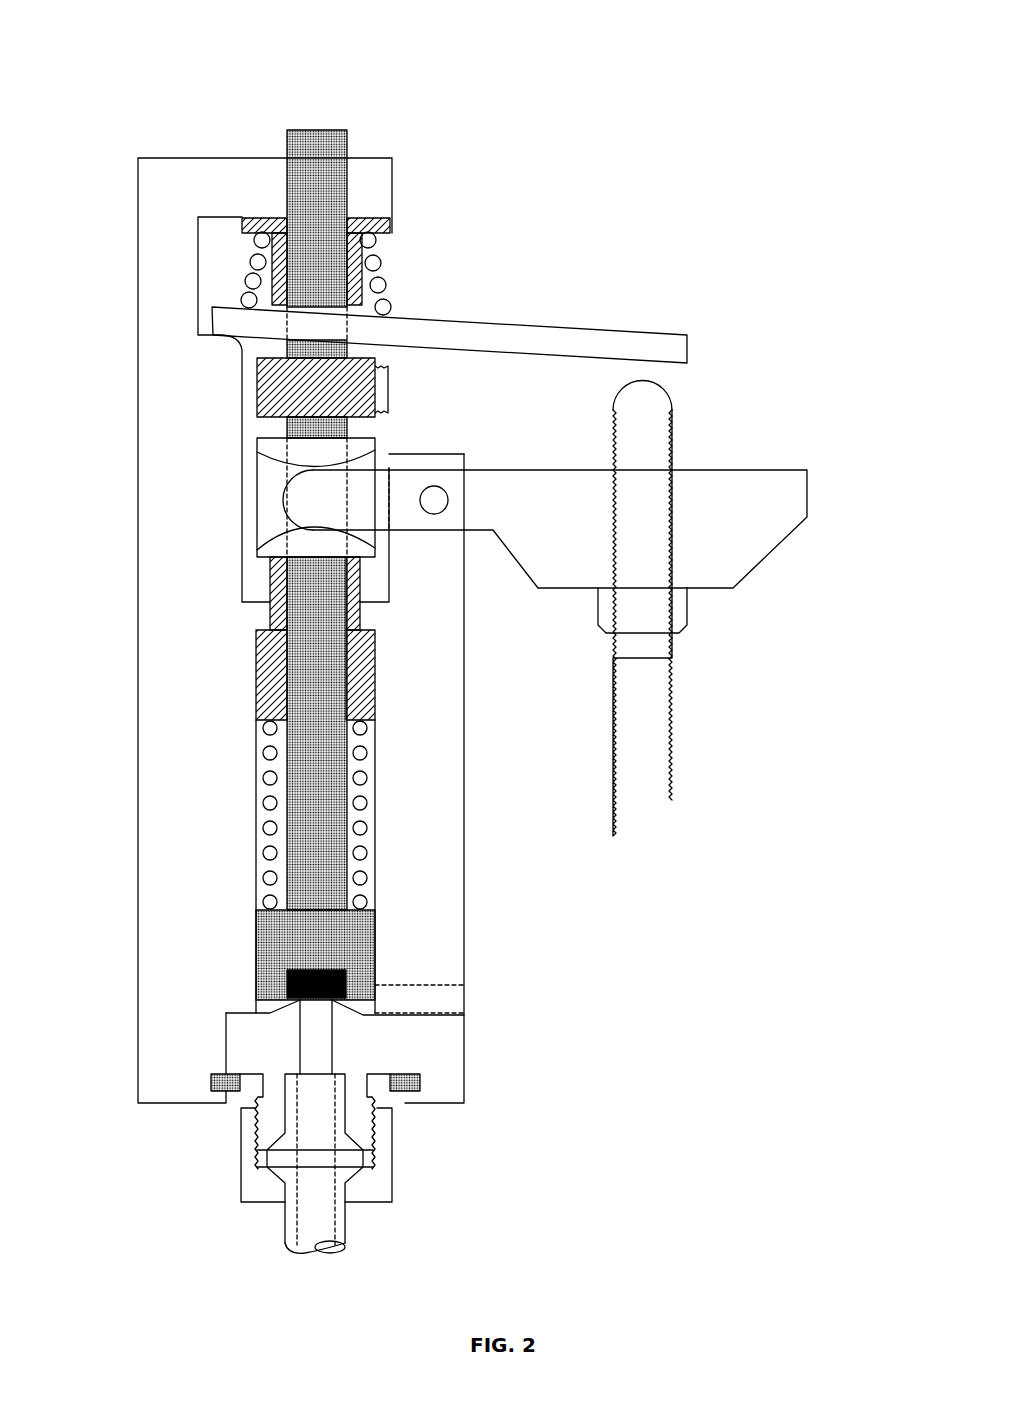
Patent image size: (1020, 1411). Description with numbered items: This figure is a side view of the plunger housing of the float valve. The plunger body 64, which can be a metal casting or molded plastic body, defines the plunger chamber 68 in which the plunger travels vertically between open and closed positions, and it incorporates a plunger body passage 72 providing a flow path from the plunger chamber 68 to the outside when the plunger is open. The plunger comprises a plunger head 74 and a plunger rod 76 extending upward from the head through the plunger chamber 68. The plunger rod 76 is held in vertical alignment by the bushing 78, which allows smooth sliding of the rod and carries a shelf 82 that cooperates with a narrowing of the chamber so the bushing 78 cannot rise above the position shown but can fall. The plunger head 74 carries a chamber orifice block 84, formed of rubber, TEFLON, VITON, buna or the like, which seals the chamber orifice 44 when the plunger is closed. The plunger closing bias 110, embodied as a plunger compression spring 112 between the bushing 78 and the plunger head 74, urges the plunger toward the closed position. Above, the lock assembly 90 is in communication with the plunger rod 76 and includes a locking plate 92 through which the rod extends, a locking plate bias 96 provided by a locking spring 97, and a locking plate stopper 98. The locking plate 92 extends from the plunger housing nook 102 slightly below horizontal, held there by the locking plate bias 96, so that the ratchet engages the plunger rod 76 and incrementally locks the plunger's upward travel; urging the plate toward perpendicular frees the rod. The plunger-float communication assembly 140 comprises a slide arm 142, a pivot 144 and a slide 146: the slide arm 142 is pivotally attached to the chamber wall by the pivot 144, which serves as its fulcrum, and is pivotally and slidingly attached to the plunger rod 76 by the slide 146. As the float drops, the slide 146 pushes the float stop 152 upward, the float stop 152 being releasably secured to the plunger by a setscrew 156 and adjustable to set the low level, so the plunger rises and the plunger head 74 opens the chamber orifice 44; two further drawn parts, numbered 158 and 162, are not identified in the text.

The chamber orifice 44 is at (318, 1022).
The plunger body 64 is at (321, 108).
The plunger chamber 68 is at (258, 840).
The plunger body passage 72 is at (450, 997).
The plunger head 74 is at (365, 935).
The plunger rod 76 is at (348, 140).
The bushing 78 is at (365, 707).
The shelf 82 is at (260, 632).
The chamber orifice block 84 is at (347, 978).
The lock assembly 90 is at (501, 305).
The locking plate 92 is at (680, 348).
The locking plate bias 96 is at (246, 278).
The locking spring 97 is at (380, 283).
The locking plate stopper 98 is at (388, 228).
The plunger housing nook 102 is at (205, 331).
The plunger closing bias 110 is at (266, 777).
The plunger compression spring 112 is at (360, 800).
The plunger-float communication assembly 140 is at (686, 609).
The slide arm 142 is at (797, 490).
The pivot 144 is at (436, 499).
The slide 146 is at (265, 528).
The float stop (low-level adjustment) 152 is at (349, 422).
The setscrew 156 is at (386, 379).
The adjustment screw 158 is at (656, 398).
The lock nut 162 is at (682, 623).